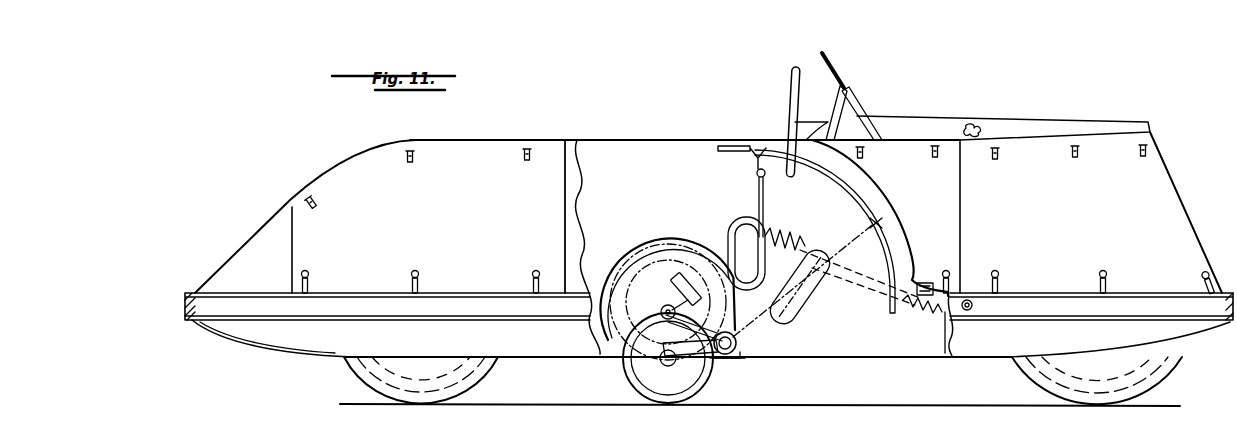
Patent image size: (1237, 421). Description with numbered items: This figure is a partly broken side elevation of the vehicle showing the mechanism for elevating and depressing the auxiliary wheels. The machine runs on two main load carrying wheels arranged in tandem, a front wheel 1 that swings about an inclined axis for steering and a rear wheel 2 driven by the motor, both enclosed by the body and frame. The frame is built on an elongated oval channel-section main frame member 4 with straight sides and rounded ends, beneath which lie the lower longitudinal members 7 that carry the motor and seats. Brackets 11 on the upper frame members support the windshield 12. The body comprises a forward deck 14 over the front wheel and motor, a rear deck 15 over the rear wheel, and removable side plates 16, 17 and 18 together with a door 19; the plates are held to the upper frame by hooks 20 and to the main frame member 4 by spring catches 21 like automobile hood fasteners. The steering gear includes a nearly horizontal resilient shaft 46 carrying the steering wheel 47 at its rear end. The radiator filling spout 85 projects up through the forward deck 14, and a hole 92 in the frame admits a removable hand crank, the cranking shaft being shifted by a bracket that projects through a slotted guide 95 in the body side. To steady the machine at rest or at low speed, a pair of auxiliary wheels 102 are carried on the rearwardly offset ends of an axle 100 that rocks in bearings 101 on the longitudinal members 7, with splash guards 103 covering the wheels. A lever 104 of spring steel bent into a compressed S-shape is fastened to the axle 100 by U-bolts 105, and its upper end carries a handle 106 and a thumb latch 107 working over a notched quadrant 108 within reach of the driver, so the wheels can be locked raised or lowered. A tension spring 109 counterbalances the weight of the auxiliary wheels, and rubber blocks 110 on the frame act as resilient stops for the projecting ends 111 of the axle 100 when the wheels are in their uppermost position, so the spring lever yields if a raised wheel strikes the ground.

The front wheel 1 is at (1030, 371).
The rear wheel 2 is at (356, 371).
The main frame member 4 is at (709, 306).
The longitudinal members 7 is at (520, 357).
The brackets 11 is at (852, 104).
The windshield 12 is at (832, 64).
The forward deck 14 is at (926, 118).
The rear deck 15 is at (476, 126).
The removable side plate 16 is at (1091, 212).
The removable side plate 17 is at (882, 248).
The removable side plate 18 is at (327, 216).
The door 19 is at (577, 140).
The hooks 20 is at (408, 158).
The spring catches 21 is at (419, 280).
The steering shaft 46 is at (814, 121).
The steering wheel 47 is at (792, 84).
The filling spout 85 is at (972, 125).
The hole 92 is at (971, 311).
The slotted guide 95 is at (921, 284).
The axle 100 is at (738, 343).
The bearings 101 is at (728, 359).
The auxiliary wheels 102 is at (652, 270).
The splash guards 103 is at (676, 226).
The lever 104 is at (764, 220).
The U-bolts 105 is at (678, 360).
The handle 106 is at (754, 159).
The thumb latch 107 is at (757, 175).
The notched quadrant 108 is at (848, 192).
The tension spring 109 is at (800, 246).
The rubber blocks 110 is at (692, 278).
The projecting ends 111 is at (683, 311).